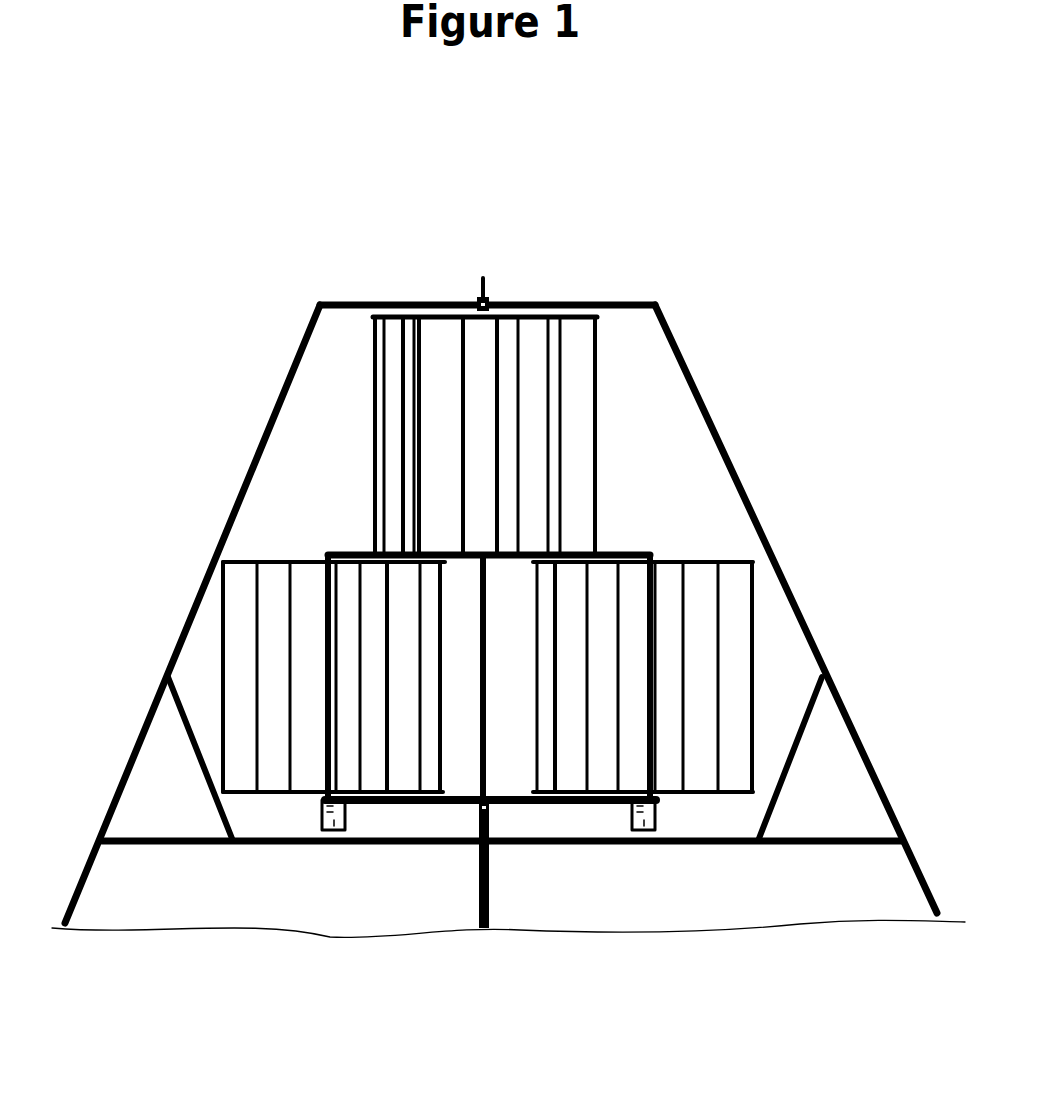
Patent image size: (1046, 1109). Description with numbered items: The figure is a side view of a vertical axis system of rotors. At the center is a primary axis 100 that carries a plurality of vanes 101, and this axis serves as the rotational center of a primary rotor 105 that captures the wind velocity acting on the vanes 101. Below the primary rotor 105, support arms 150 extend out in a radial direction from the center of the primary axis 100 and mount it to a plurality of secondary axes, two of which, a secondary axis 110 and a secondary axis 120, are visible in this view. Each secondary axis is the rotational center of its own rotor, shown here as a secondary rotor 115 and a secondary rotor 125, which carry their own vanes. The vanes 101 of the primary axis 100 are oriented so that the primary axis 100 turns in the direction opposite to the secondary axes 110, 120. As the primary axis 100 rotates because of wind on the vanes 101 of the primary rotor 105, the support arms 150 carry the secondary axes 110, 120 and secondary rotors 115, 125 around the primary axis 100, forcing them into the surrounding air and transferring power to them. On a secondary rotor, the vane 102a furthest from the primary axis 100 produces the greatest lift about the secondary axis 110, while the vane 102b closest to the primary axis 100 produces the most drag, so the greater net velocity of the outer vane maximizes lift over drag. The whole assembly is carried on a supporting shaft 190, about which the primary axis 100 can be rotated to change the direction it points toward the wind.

The primary axis 100 is at (483, 300).
The vanes 101 is at (370, 400).
The primary rotor 105 is at (595, 319).
The support arms 150 is at (328, 553).
The secondary axis 110 is at (333, 610).
The secondary axis 120 is at (647, 612).
The vane furthest from the primary axis 102a is at (223, 668).
The vane closest to the primary axis 102b is at (453, 794).
The secondary rotor 115 is at (237, 792).
The secondary rotor 125 is at (717, 797).
The supporting shaft 190 is at (487, 843).